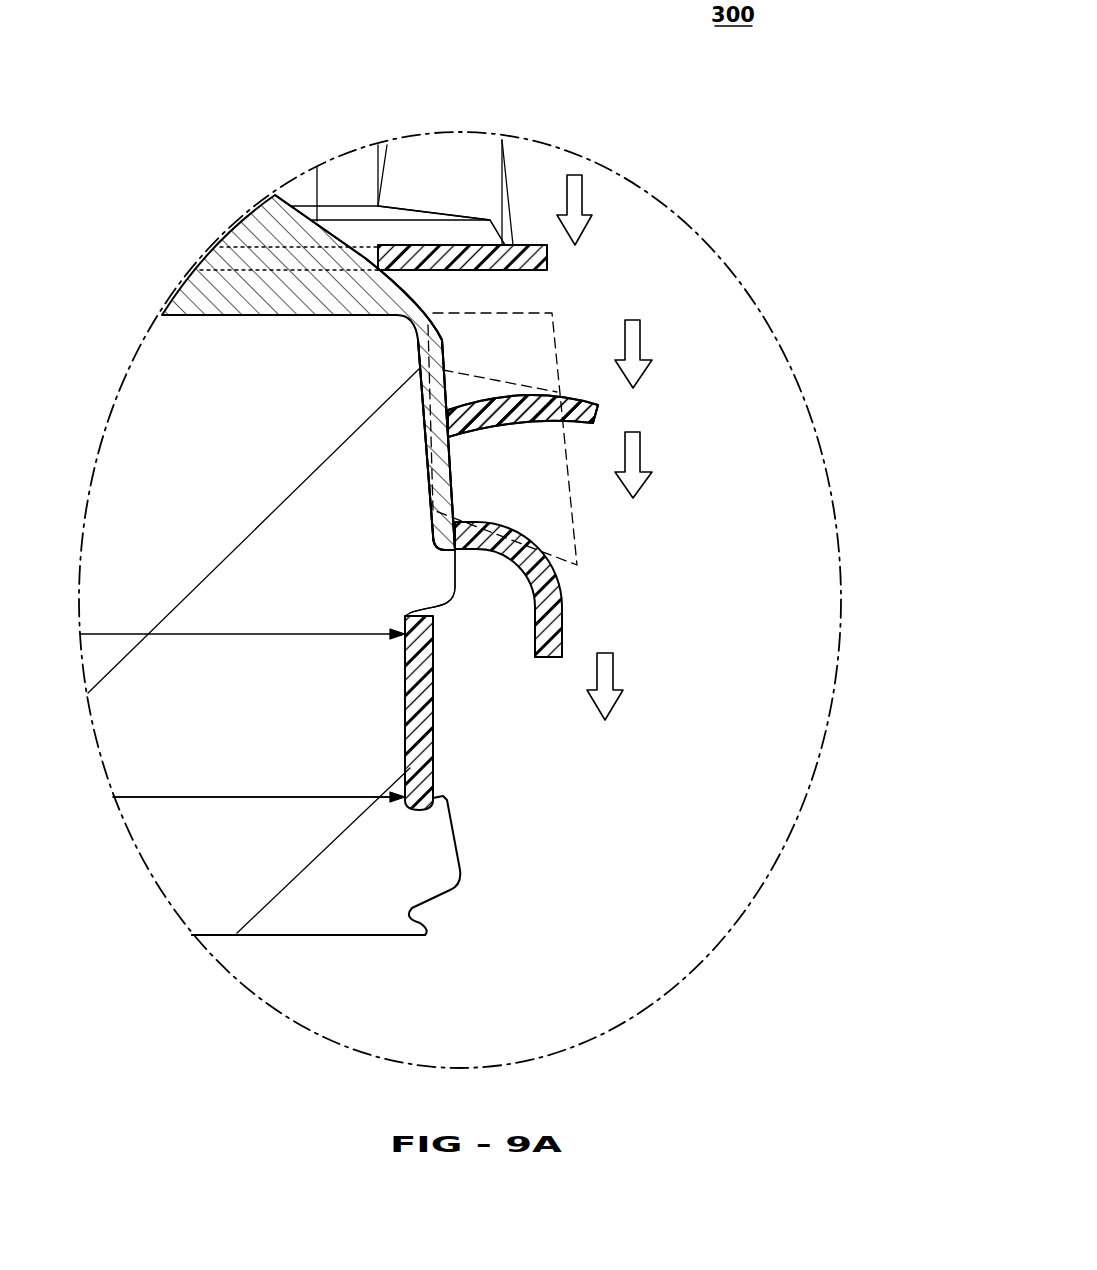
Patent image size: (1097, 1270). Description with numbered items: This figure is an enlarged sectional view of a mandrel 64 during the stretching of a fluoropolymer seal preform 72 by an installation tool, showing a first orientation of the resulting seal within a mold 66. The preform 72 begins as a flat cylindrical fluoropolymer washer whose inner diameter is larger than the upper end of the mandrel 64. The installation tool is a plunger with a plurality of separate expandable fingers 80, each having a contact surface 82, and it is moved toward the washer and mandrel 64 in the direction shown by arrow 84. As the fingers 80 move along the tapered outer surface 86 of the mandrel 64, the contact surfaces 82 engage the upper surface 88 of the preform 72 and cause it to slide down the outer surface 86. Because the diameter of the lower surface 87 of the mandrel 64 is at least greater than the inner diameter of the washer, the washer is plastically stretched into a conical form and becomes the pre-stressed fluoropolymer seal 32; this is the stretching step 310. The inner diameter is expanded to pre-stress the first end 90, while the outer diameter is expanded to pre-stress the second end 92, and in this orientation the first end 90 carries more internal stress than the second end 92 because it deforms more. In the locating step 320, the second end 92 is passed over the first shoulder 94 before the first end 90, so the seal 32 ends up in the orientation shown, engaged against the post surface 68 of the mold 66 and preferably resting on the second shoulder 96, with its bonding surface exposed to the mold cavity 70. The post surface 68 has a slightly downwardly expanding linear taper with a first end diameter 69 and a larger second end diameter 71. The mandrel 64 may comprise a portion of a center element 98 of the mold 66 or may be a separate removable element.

The pre-stressed fluoropolymer seal 32 is at (595, 427).
The mandrel 64 is at (240, 283).
The mold 66 is at (112, 790).
The post surface 68 is at (410, 772).
The first end diameter 69 is at (100, 633).
The mold cavity 70 is at (533, 807).
The second end diameter 71 is at (167, 797).
The fluoropolymer seal preform 72 is at (533, 243).
The expandable fingers 80 is at (420, 150).
The contact surface 82 is at (497, 233).
The arrow 84 is at (583, 205).
The tapered outer surface 86 is at (405, 290).
The lower surface 87 is at (449, 467).
The upper surface 88 is at (567, 393).
The first end 90 is at (378, 258).
The second end 92 is at (560, 270).
The first shoulder 94 is at (440, 565).
The second shoulder 96 is at (433, 867).
The center element 98 is at (155, 497).
The stretching step 310 is at (632, 303).
The locating step 320 is at (480, 707).